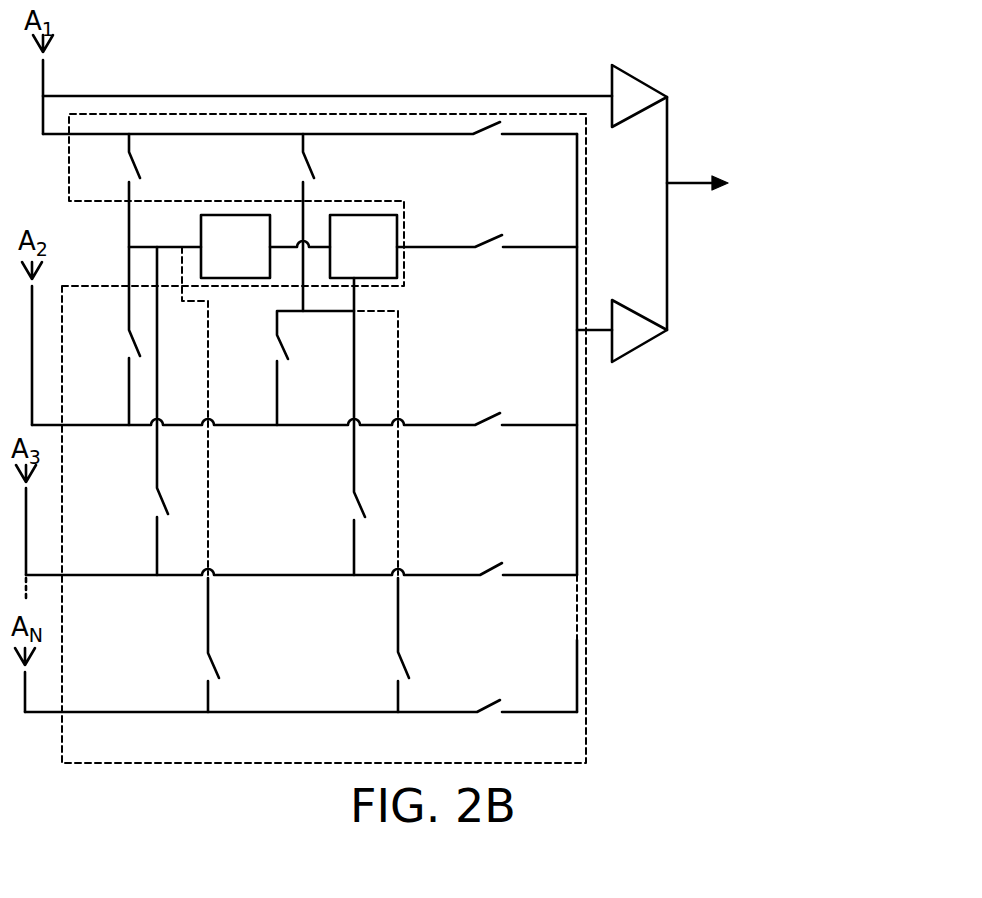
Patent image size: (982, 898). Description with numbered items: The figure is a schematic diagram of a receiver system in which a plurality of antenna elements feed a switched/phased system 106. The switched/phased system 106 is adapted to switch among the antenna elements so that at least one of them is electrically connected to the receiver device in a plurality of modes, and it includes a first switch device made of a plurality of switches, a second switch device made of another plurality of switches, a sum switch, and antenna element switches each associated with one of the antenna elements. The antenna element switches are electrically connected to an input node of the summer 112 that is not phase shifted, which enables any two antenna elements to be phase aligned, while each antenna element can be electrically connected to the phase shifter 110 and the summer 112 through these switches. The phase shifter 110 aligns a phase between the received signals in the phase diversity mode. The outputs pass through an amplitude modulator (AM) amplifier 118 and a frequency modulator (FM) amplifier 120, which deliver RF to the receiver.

The switched/phased system 106 is at (197, 778).
The phase shifter 110 is at (245, 213).
The summer 112 is at (378, 213).
The amplitude modulator (AM) amplifier 118 is at (627, 64).
The frequency modulator (FM) amplifier 120 is at (629, 307).